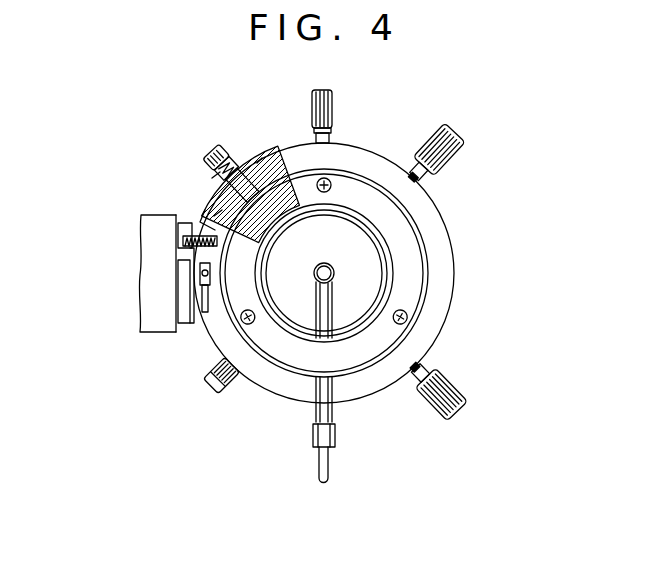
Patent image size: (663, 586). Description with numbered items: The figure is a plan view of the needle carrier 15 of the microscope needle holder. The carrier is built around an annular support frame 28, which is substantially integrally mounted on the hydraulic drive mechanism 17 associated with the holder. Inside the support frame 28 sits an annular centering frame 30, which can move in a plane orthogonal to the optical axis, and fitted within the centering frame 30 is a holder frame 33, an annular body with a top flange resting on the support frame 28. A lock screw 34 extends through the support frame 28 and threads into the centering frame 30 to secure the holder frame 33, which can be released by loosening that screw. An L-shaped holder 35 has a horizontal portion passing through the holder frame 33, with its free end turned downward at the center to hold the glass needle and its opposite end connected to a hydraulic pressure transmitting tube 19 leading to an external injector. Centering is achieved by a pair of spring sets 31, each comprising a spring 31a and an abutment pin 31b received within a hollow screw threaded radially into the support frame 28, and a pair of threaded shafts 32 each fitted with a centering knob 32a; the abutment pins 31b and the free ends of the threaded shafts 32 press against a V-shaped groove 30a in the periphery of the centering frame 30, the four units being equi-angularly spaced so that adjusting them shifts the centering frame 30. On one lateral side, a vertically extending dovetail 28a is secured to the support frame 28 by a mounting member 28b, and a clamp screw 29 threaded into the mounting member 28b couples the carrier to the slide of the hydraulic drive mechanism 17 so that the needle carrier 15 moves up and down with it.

The needle carrier 15 is at (448, 221).
The hydraulic drive mechanism 17 is at (152, 333).
The hydraulic pressure transmitting tube 19 is at (318, 463).
The annular support frame 28 is at (272, 392).
The dovetail 28a is at (178, 272).
The mounting member 28b is at (178, 217).
The clamp screw 29 is at (195, 322).
The annular centering frame 30 is at (257, 213).
The V-shaped groove 30a is at (222, 210).
The spring set 31 is at (207, 392).
The spring 31a is at (212, 178).
The abutment pin 31b is at (257, 163).
The threaded shaft 32 is at (426, 176).
The centering knob 32a is at (455, 140).
The holder frame 33 is at (413, 278).
The lock screw 34 is at (333, 100).
The L-shaped holder 35 is at (330, 290).